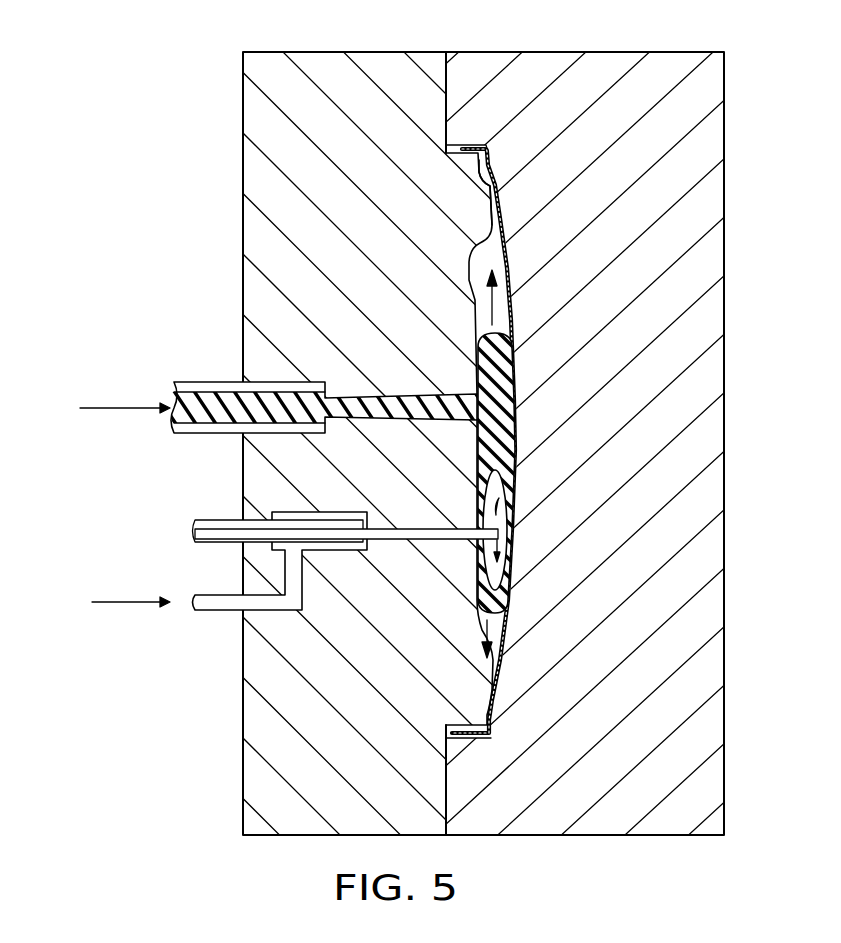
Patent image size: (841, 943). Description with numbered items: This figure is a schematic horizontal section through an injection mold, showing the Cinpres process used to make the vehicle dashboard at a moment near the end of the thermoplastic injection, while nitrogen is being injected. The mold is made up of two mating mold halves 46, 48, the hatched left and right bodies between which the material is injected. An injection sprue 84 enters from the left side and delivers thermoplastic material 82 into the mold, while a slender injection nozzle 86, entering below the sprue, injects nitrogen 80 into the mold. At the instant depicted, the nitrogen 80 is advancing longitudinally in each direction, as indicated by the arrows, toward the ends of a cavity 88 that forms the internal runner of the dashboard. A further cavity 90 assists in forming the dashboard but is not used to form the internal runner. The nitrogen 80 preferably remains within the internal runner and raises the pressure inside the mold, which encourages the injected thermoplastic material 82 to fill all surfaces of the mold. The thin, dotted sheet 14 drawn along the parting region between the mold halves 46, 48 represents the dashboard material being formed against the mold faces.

The thermoplastic sheet 14 is at (513, 258).
The mold half 46 is at (262, 665).
The mold half 48 is at (653, 547).
The nitrogen 80 is at (498, 492).
The thermoplastic material 82 is at (502, 418).
The injection sprue 84 is at (430, 393).
The injection nozzle 86 is at (420, 523).
The cavity 88 is at (473, 246).
The cavity 90 is at (490, 207).